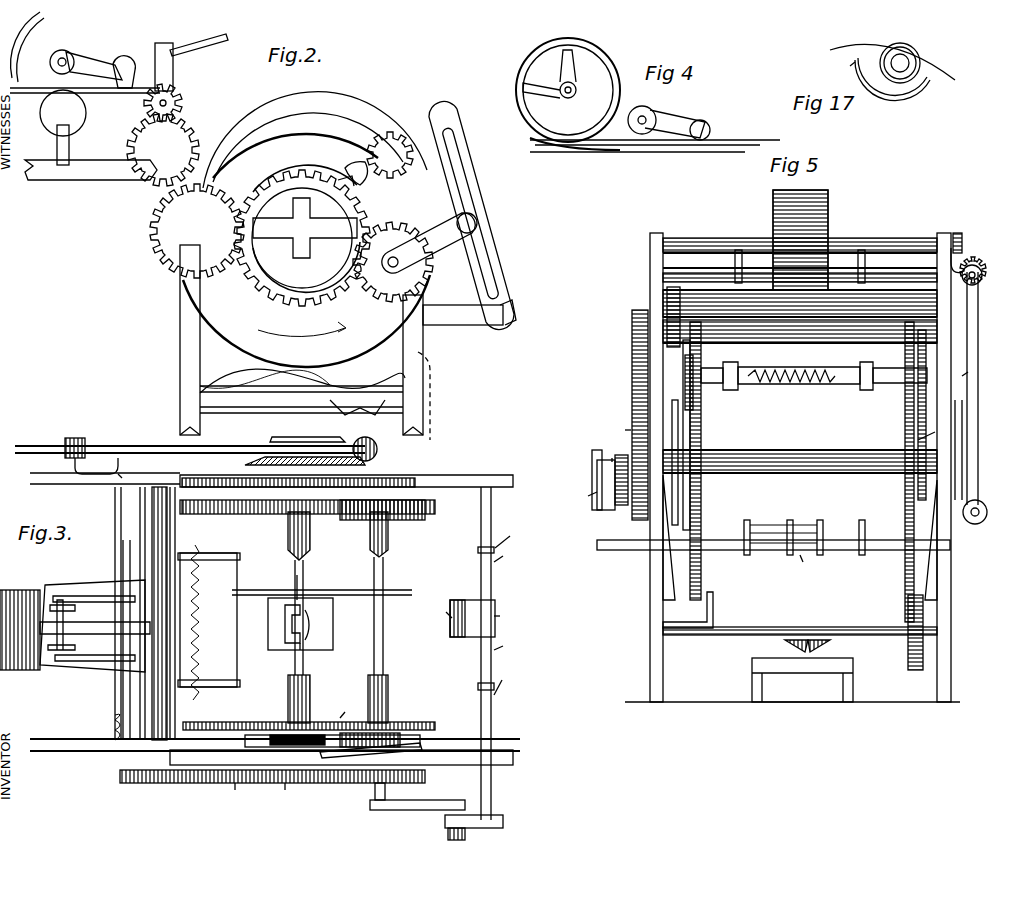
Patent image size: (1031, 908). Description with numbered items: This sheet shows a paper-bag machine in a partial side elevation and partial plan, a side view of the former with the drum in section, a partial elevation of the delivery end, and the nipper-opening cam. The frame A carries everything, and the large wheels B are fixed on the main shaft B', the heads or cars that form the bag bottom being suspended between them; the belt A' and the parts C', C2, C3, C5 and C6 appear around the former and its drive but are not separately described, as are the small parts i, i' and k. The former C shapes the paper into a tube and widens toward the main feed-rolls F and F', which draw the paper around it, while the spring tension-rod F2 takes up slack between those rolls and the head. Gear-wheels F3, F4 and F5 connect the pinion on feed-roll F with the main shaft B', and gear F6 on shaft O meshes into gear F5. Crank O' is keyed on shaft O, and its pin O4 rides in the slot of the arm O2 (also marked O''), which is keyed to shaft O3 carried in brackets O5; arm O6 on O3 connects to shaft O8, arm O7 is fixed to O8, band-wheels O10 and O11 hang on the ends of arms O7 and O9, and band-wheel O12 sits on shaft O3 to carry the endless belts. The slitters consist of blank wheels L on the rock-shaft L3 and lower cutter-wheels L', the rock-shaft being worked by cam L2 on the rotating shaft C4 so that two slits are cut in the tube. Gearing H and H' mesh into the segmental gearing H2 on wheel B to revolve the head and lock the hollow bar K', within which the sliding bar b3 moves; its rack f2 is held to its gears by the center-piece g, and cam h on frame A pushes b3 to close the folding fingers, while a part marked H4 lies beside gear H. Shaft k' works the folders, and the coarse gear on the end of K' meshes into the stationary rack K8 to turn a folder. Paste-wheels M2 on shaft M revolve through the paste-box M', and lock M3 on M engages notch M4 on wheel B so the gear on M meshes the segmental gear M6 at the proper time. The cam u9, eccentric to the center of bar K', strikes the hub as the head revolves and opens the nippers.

In FIG. 2, the frame A is at (303, 263).
In FIG. 3, the frame A is at (275, 604).
In FIG. 5, the frame A is at (792, 467).
In FIG. 2, the belt A' is at (302, 376).
In FIG. 2, the large wheels B is at (306, 321).
In FIG. 3, the large wheels B is at (320, 620).
In FIG. 5, the large wheels B is at (800, 509).
In FIG. 17, the large wheels B is at (892, 72).
In FIG. 3, the main shaft B' is at (306, 617).
In FIG. 3, the former C is at (72, 625).
In FIG. 4, the former C is at (644, 95).
In FIG. 2, the carriage wheel C' is at (26, 47).
In FIG. 4, the carriage wheel C' is at (562, 62).
In FIG. 5, the carriage wheel C' is at (800, 240).
In FIG. 5, the carriage bar C2 is at (800, 252).
In FIG. 3, the carriage plate C3 is at (119, 640).
In FIG. 5, the carriage plate C3 is at (963, 375).
In FIG. 3, the rotating shaft C4 is at (190, 440).
In FIG. 5, the rotating shaft C4 is at (979, 369).
In FIG. 3, the brush C5 is at (320, 451).
In FIG. 5, the brush C5 is at (987, 512).
In FIG. 3, the brush support C6 is at (300, 445).
In FIG. 2, the main feed-roll F is at (169, 103).
In FIG. 2, the main feed-roll F' is at (294, 172).
In FIG. 5, the main feed-roll F' is at (800, 317).
In FIG. 2, the spring tension-rod F2 is at (206, 37).
In FIG. 3, the spring tension-rod F2 is at (217, 618).
In FIG. 5, the spring tension-rod F2 is at (811, 266).
In FIG. 2, the gear-wheel F3 is at (163, 150).
In FIG. 3, the gear-wheel F3 is at (272, 788).
In FIG. 2, the gear-wheel F4 is at (197, 231).
In FIG. 3, the gear-wheel F4 is at (227, 794).
In FIG. 5, the gear-wheel F4 is at (771, 415).
In FIG. 2, the gear-wheel F5 is at (302, 238).
In FIG. 3, the gear-wheel F5 is at (280, 794).
In FIG. 5, the gear-wheel F5 is at (619, 430).
In FIG. 3, the gear F6 is at (372, 799).
In FIG. 5, the gear F6 is at (616, 494).
In FIG. 2, the gearing H is at (390, 155).
In FIG. 3, the gearing H is at (322, 723).
In FIG. 2, the gearing H' is at (364, 189).
In FIG. 3, the gearing H' is at (350, 706).
In FIG. 2, the segmental gearing H2 is at (306, 228).
In FIG. 5, the segmental gearing H2 is at (678, 435).
In FIG. 2, the pawl H4 is at (346, 170).
In FIG. 5, the hollow bar K' is at (794, 365).
In FIG. 17, the hollow bar K' is at (916, 60).
In FIG. 2, the stationary rack K8 is at (455, 383).
In FIG. 5, the stationary rack K8 is at (699, 610).
In FIG. 2, the blank wheels L is at (92, 58).
In FIG. 3, the blank wheels L is at (61, 620).
In FIG. 4, the blank wheels L is at (669, 113).
In FIG. 2, the lower cutter-wheels L' is at (63, 127).
In FIG. 3, the cam L2 is at (91, 446).
In FIG. 5, the cam L2 is at (980, 266).
In FIG. 3, the rock-shaft L3 is at (95, 620).
In FIG. 3, the shaft M is at (308, 584).
In FIG. 5, the shaft M is at (800, 622).
In FIG. 3, the paste-box M' is at (318, 654).
In FIG. 5, the paste-box M' is at (802, 680).
In FIG. 3, the paste-wheels M2 is at (314, 624).
In FIG. 5, the paste-wheels M2 is at (808, 647).
In FIG. 3, the lock M3 is at (307, 507).
In FIG. 5, the lock M3 is at (903, 632).
In FIG. 5, the notch M4 is at (927, 440).
In FIG. 3, the segmental gear M6 is at (401, 505).
In FIG. 5, the segmental gear M6 is at (905, 395).
In FIG. 2, the shaft O is at (471, 215).
In FIG. 3, the shaft O is at (447, 653).
In FIG. 3, the crank O' is at (417, 816).
In FIG. 5, the crank O' is at (605, 452).
In FIG. 3, the arm O'' is at (442, 613).
In FIG. 5, the arm O'' is at (702, 519).
In FIG. 2, the arm O2 is at (502, 312).
In FIG. 3, the arm O2 is at (474, 831).
In FIG. 5, the arm O2 is at (583, 495).
In FIG. 2, the shaft O3 is at (428, 243).
In FIG. 3, the shaft O3 is at (506, 685).
In FIG. 5, the shaft O3 is at (773, 536).
In FIG. 2, the pin O4 is at (482, 223).
In FIG. 3, the pin O4 is at (455, 843).
In FIG. 5, the pin O4 is at (586, 480).
In FIG. 2, the brackets O5 is at (463, 315).
In FIG. 3, the brackets O5 is at (341, 758).
In FIG. 3, the arm O6 is at (511, 604).
In FIG. 5, the arm O6 is at (755, 510).
In FIG. 5, the arm O7 is at (829, 524).
In FIG. 3, the shaft O8 is at (506, 650).
In FIG. 5, the shaft O8 is at (805, 522).
In FIG. 3, the arm O9 is at (508, 557).
In FIG. 5, the arm O9 is at (873, 536).
In FIG. 5, the band-wheel O10 is at (805, 528).
In FIG. 3, the band-wheel O11 is at (472, 609).
In FIG. 3, the band-wheel O12 is at (508, 612).
In FIG. 3, the sliding bar b3 is at (373, 661).
In FIG. 5, the sliding bar b3 is at (814, 368).
In FIG. 5, the rack f2 is at (791, 386).
In FIG. 3, the center-piece g is at (198, 622).
In FIG. 3, the cam h is at (193, 507).
In FIG. 3, the pipe i is at (123, 467).
In FIG. 3, the spring i' is at (107, 727).
In FIG. 5, the arm k is at (928, 540).
In FIG. 3, the shaft k' is at (378, 745).
In FIG. 5, the shaft k' is at (675, 537).
In FIG. 17, the cam u9 is at (842, 67).